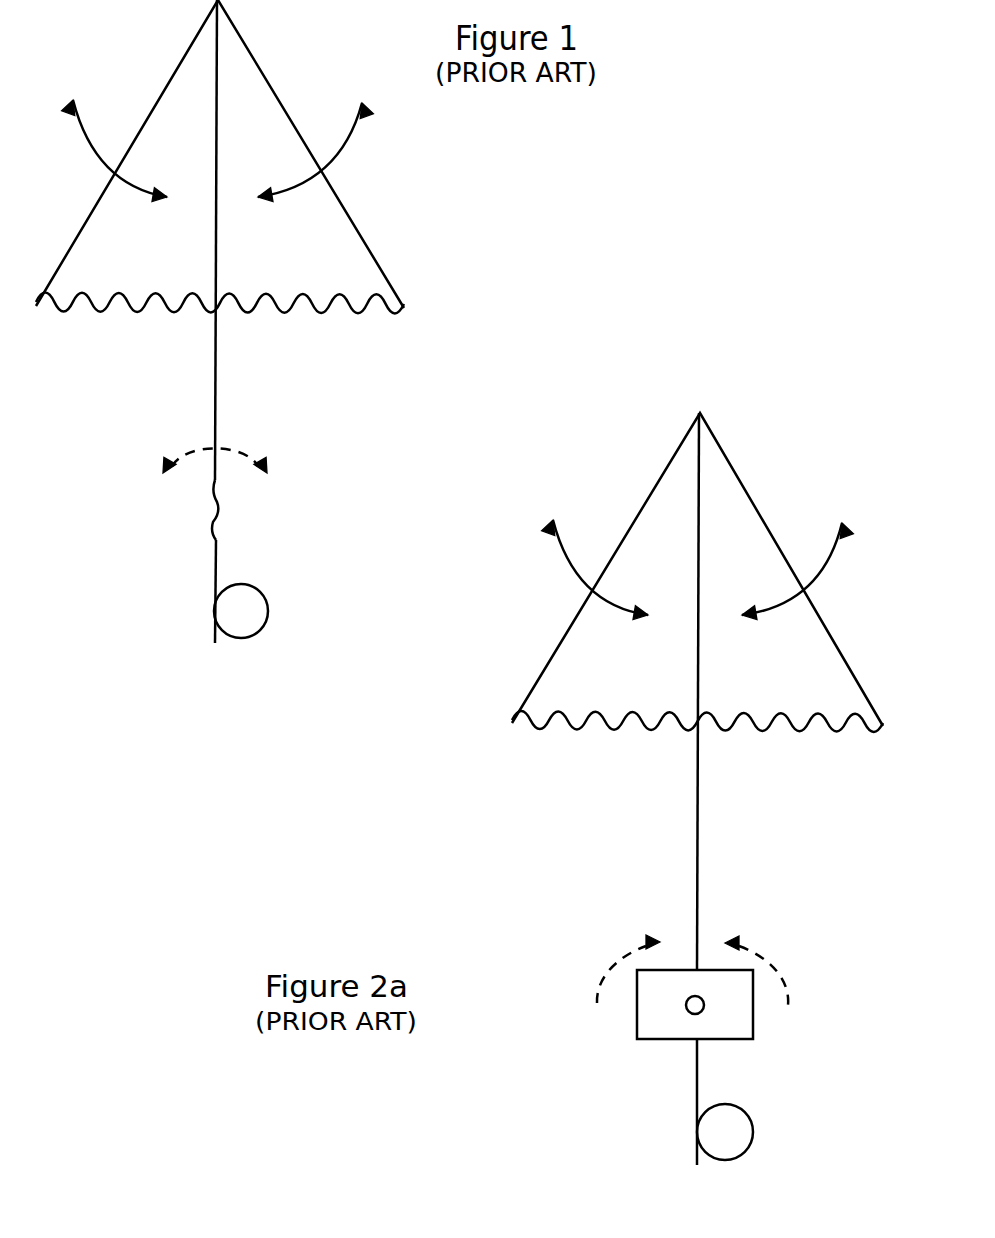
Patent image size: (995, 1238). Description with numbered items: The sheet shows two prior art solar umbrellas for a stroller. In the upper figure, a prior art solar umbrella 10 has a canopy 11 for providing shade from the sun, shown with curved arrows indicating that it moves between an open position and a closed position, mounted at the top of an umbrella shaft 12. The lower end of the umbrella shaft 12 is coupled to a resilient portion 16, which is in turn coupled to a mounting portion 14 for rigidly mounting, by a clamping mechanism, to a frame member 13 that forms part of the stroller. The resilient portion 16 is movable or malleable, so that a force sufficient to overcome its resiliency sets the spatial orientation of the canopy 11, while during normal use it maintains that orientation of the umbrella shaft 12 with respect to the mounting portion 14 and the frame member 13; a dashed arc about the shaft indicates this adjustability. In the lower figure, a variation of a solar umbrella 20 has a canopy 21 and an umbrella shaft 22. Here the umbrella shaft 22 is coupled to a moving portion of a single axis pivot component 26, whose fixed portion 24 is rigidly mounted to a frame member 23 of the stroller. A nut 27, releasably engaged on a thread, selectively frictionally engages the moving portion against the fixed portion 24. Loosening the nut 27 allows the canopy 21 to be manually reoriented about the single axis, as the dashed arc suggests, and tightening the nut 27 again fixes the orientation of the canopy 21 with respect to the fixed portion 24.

In FIG. 1, the solar umbrella 10 is at (386, 410).
In FIG. 1, the canopy 11 is at (338, 197).
In FIG. 1, the umbrella shaft 12 is at (216, 427).
In FIG. 1, the frame member 13 is at (268, 603).
In FIG. 1, the mounting portion 14 is at (214, 570).
In FIG. 1, the resilient portion 16 is at (214, 512).
In FIG. 2A, the solar umbrella 20 is at (470, 876).
In FIG. 2A, the canopy 21 is at (528, 693).
In FIG. 2A, the umbrella shaft 22 is at (698, 918).
In FIG. 2A, the frame member 23 is at (750, 1150).
In FIG. 2A, the fixed portion 24 is at (696, 1090).
In FIG. 2A, the pivot component 26 is at (753, 1030).
In FIG. 2A, the nut 27 is at (703, 1000).